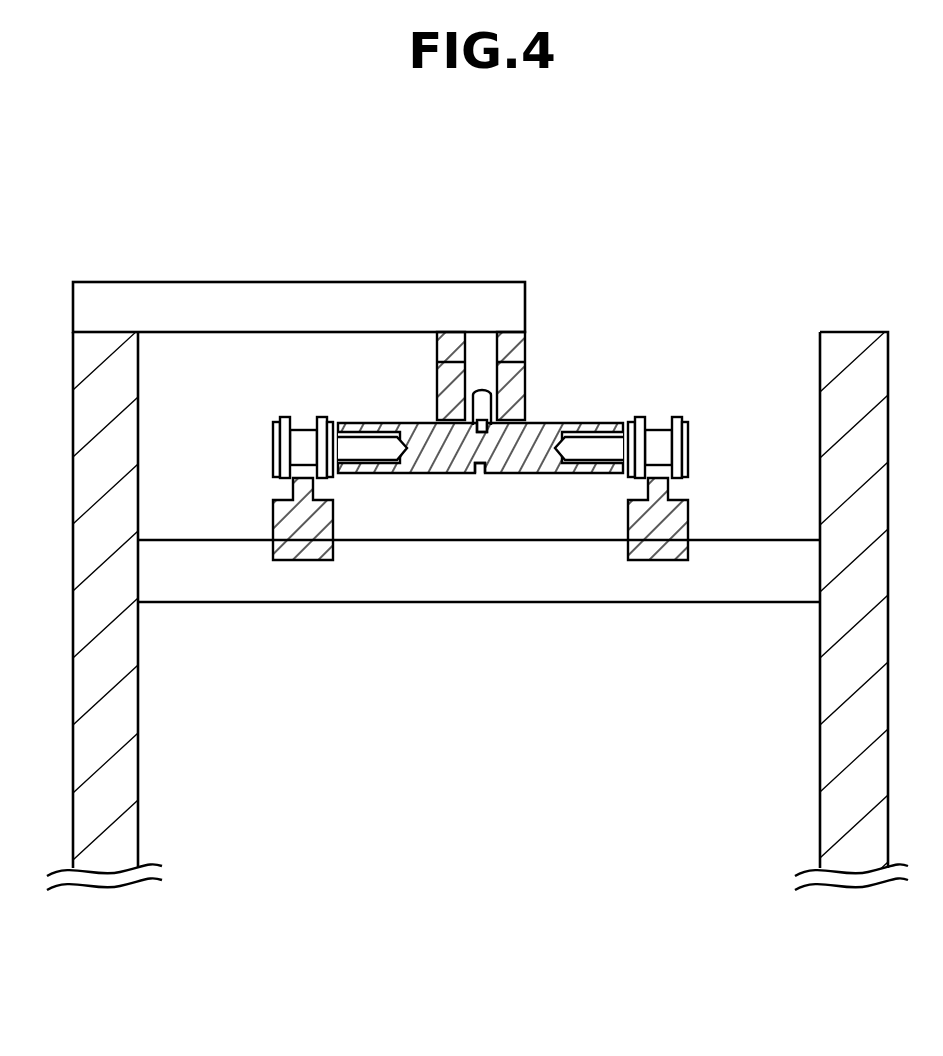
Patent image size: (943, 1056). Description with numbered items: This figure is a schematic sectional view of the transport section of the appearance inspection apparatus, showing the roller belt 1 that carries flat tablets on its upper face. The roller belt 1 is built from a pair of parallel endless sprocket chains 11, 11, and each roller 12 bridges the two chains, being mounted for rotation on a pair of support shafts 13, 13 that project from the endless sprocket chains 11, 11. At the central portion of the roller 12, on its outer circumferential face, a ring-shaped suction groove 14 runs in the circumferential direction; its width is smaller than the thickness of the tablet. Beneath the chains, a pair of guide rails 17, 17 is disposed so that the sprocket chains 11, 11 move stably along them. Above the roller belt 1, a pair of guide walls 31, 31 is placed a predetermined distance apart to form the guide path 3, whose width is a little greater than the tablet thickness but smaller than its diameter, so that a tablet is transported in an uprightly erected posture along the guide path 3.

The roller belt 1 is at (612, 401).
The guide path 3 is at (485, 363).
The guide wall 31 is at (437, 385).
The endless sprocket chain 11 is at (300, 450).
The roller 12 is at (553, 423).
The support shaft 13 is at (384, 450).
The suction groove 14 is at (482, 472).
The guide rail 17 is at (306, 532).